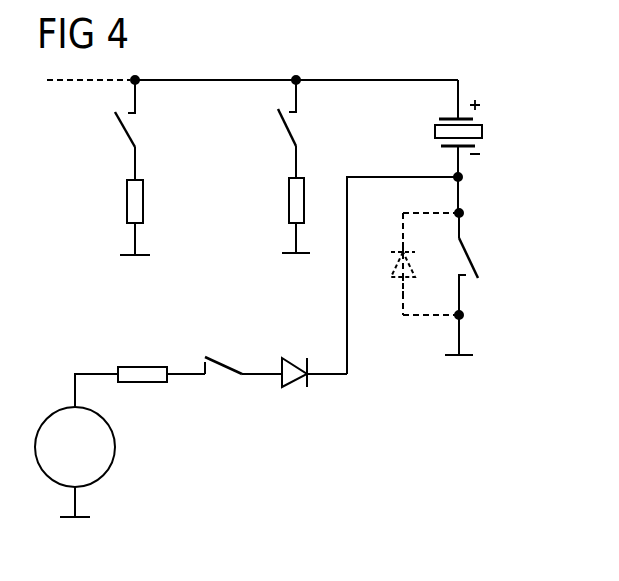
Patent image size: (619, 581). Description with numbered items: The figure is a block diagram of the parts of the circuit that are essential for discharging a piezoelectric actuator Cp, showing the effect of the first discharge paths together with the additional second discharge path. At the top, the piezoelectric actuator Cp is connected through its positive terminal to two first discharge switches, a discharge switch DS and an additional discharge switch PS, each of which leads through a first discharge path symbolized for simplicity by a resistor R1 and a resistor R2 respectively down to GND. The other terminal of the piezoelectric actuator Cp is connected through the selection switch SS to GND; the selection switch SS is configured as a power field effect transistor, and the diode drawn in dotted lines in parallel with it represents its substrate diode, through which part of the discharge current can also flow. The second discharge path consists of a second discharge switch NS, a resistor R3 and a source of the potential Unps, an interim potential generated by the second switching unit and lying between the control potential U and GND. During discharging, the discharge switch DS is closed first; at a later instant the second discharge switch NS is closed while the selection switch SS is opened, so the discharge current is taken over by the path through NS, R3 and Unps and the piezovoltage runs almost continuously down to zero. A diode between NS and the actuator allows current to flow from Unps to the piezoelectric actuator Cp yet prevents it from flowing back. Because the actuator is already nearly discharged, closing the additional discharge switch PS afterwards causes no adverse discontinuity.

The discharge switch DS is at (124, 128).
The additional discharge switch PS is at (286, 127).
The piezoelectric actuator Cp is at (482, 131).
The selection switch SS is at (470, 258).
The resistor R1 is at (127, 203).
The resistor R2 is at (289, 203).
The resistor R3 is at (142, 367).
The second discharge switch NS is at (226, 368).
The potential Unps is at (76, 430).
The ground GND is at (268, 435).